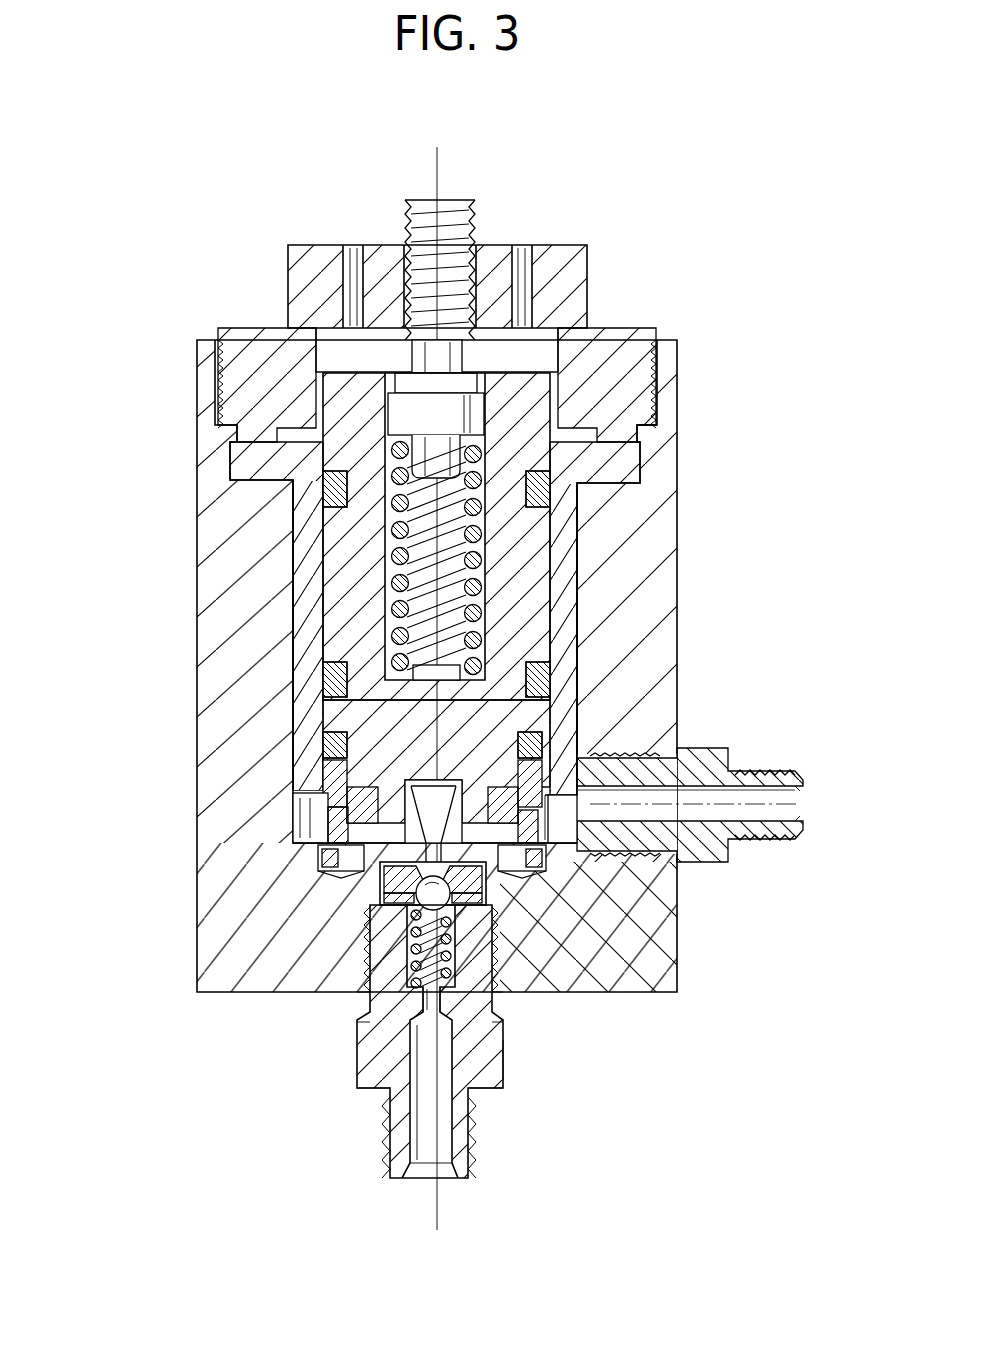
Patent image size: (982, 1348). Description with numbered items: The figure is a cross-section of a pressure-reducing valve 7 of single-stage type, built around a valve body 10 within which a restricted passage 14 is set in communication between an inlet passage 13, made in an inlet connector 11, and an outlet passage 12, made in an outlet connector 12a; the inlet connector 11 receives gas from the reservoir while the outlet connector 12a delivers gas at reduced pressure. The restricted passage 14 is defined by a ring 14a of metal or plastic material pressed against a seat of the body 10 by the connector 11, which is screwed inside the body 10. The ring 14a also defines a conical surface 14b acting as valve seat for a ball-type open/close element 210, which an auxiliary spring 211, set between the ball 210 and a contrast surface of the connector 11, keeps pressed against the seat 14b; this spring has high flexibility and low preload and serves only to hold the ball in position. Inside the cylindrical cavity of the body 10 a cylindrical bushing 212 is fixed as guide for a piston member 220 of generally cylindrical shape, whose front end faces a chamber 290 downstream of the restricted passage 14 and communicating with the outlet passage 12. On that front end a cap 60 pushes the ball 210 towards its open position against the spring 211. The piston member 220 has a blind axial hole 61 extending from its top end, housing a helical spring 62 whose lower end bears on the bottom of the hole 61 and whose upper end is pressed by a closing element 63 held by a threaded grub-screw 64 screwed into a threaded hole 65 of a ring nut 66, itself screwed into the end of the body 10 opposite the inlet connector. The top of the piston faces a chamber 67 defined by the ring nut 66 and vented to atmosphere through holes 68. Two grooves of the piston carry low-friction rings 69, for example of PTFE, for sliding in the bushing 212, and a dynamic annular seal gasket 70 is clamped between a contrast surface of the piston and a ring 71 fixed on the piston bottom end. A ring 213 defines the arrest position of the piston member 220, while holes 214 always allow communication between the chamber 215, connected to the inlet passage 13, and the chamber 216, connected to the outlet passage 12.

The pressure-reducing valve 7 is at (102, 254).
The valve body 10 is at (188, 952).
The inlet connector 11 is at (497, 1092).
The outlet passage 12 is at (733, 862).
The outlet connector 12a is at (778, 765).
The inlet passage 13 is at (420, 1167).
The restricted passage 14 is at (540, 965).
The ring 14a is at (278, 994).
The conical surface 14b is at (405, 945).
The cap 60 is at (418, 778).
The blind axial hole 61 is at (330, 528).
The helical spring 62 is at (396, 566).
The closing element 63 is at (540, 360).
The threaded grub-screw 64 is at (470, 216).
The threaded hole 65 is at (437, 240).
The ring nut 66 is at (248, 318).
The chamber 67 is at (646, 328).
The holes 68 is at (355, 245).
The rings 69 is at (550, 492).
The annular seal gasket 70 is at (548, 738).
The ring 71 is at (672, 978).
The ball-type open/close element 210 is at (504, 1066).
The auxiliary spring 211 is at (360, 1048).
The cylindrical bushing 212 is at (567, 598).
The ring 213 is at (600, 950).
The holes 214 is at (332, 864).
The chamber 215 is at (560, 930).
The chamber 216 is at (672, 940).
The piston member 220 is at (577, 546).
The chamber 290 is at (370, 850).